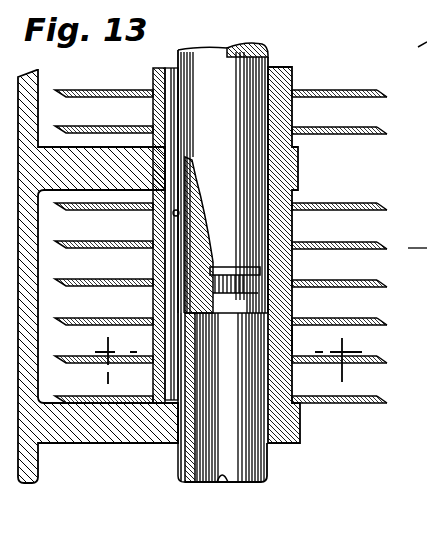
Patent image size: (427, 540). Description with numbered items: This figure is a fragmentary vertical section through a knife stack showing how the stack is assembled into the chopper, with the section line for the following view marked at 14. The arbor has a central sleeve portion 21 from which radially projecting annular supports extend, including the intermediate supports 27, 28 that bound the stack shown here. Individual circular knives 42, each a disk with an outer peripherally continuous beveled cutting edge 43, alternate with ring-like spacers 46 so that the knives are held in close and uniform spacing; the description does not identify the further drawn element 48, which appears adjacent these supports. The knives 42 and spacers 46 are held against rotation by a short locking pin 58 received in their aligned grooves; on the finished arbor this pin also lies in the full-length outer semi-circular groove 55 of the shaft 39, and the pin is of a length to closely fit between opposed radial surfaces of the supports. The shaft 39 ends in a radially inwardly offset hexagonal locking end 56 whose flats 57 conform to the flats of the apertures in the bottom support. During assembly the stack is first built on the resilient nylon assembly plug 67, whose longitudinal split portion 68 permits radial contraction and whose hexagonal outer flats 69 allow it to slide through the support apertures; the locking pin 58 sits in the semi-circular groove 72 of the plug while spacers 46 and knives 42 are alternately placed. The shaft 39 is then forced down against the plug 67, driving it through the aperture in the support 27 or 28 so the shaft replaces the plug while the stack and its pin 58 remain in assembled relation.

The section line 14 is at (224, 364).
The sleeve portion 21 is at (38, 88).
The intermediate support 27 is at (298, 158).
The intermediate support 28 is at (90, 444).
The shaft 39 is at (198, 55).
The knife 42 is at (355, 127).
The beveled cutting edge 43 is at (382, 92).
The spacer 46 is at (154, 297).
The sleeve 48 is at (298, 168).
The semi-circular groove 55 is at (178, 210).
The hexagonal locking end 56 is at (252, 250).
The flats 57 is at (230, 272).
The locking pin 58 is at (164, 70).
The assembly plug 67 is at (261, 467).
The longitudinal split portion 68 is at (222, 474).
The flats 69 is at (292, 340).
The semi-circular groove 72 is at (182, 459).